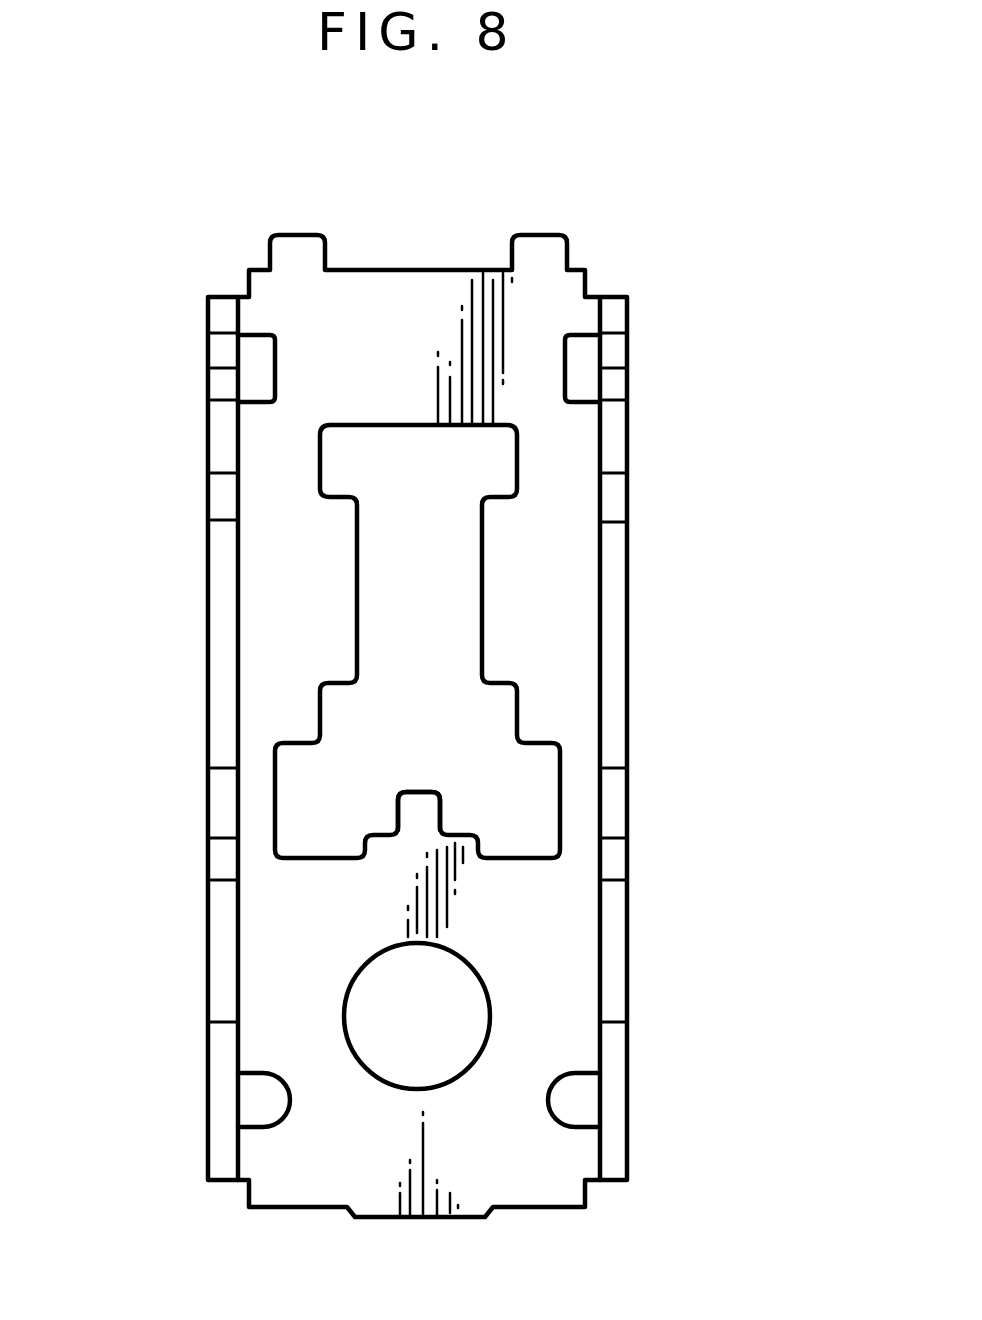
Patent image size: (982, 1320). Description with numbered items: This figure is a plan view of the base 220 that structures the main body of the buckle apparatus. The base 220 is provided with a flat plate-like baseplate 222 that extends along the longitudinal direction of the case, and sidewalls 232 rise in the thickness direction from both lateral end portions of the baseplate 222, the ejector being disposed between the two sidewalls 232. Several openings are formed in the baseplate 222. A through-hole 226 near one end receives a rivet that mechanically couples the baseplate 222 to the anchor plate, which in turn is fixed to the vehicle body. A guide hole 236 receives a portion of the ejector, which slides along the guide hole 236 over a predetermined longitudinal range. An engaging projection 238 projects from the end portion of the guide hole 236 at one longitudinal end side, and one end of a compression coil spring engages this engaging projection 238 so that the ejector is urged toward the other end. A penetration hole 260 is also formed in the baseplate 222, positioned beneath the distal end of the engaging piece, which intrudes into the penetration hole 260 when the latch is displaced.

The base 220 is at (663, 490).
The baseplate 222 is at (348, 318).
The through-hole 226 is at (489, 1040).
The sidewalls 232 is at (227, 648).
The guide hole 236 is at (482, 540).
The engaging projection 238 is at (420, 792).
The penetration hole 260 is at (384, 425).